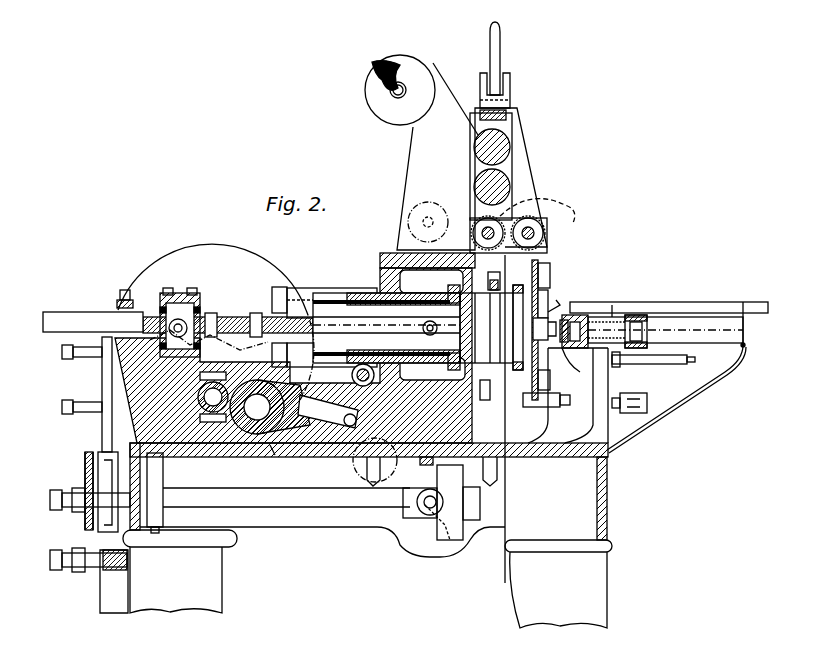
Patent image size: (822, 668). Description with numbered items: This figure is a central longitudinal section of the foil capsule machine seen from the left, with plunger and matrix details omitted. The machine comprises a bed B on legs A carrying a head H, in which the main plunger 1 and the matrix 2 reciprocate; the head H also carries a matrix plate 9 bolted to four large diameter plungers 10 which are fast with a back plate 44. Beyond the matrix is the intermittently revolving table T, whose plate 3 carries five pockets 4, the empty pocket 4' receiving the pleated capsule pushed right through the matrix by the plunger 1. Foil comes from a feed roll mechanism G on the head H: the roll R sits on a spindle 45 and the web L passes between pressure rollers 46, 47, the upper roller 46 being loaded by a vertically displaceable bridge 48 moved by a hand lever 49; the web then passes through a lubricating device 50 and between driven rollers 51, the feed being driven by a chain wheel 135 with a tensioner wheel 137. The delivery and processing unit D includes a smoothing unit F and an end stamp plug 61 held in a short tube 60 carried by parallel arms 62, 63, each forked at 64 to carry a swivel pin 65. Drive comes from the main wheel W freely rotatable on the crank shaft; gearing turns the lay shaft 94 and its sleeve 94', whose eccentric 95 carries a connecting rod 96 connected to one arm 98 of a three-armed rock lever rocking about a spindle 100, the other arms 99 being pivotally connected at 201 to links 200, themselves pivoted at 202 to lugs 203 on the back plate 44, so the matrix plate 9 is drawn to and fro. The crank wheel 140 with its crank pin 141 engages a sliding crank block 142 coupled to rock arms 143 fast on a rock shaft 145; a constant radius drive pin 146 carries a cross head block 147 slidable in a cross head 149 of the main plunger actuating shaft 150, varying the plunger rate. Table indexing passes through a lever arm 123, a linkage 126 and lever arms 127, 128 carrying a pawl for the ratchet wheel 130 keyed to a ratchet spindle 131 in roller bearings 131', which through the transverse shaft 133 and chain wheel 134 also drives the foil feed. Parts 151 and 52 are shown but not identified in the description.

The feed roll mechanism G is at (472, 179).
The web roll R is at (365, 80).
The spindle 45 is at (390, 95).
The web L is at (445, 95).
The hand lever 49 is at (500, 60).
The vertically displaceable bridge 48 is at (506, 115).
The upper pressure roller 46 is at (495, 145).
The lower pressure roller 47 is at (498, 185).
The chain wheel 135 is at (410, 218).
The lubricating device 50 is at (544, 212).
The driven rollers 51 is at (495, 226).
The head H is at (466, 425).
The pivotal connection 202 is at (431, 281).
The back plate 44 is at (455, 363).
The crank wheel 140 is at (215, 317).
The main plunger actuating shaft 150 is at (257, 315).
The constant radius drive pin 146 is at (178, 320).
The cross head block 147 is at (185, 288).
The cross head 149 is at (200, 300).
The tube 151 is at (295, 290).
The rock arm 143 is at (285, 352).
The sliding crank block 142 is at (211, 340).
The pivotal connection 201 is at (352, 292).
The links 200 is at (386, 349).
The rock lever arms 99 is at (350, 340).
The lugs 203 is at (445, 327).
The matrix plate 9 is at (519, 285).
The plungers 10 is at (492, 400).
The plate 3 is at (538, 358).
The pockets 4 is at (546, 334).
The table T is at (545, 300).
The main plunger 1 is at (540, 329).
The matrix 2 is at (550, 325).
The empty pocket 4' is at (546, 310).
The smoothing unit F is at (568, 379).
The plug 61 is at (571, 367).
The short tube 60 is at (568, 318).
The operating arm 62 is at (592, 317).
The delivery and processing unit D is at (722, 310).
The operating arm 63 is at (645, 315).
The fork 64 is at (648, 320).
The swivel pin 65 is at (642, 332).
The frame 52 is at (505, 473).
The legs A is at (356, 579).
The ratchet spindle 131 is at (322, 522).
The roller bearings 131' is at (174, 493).
The transverse intermittently driven shaft 133 is at (425, 508).
The chain wheel 134 is at (445, 530).
The bed B is at (361, 460).
The tensioner wheel 137 is at (358, 478).
The rock shaft 145 is at (248, 455).
The lay shaft 94 is at (270, 459).
The eccentric 95 is at (292, 456).
The sleeve 94' is at (280, 472).
The linkage 126 is at (102, 430).
The lever arm 127 is at (104, 452).
The lever arm 123 is at (98, 360).
The crank pin 141 is at (100, 395).
The ratchet wheel 130 is at (85, 458).
The lever arm 128 is at (98, 508).
The rock lever arm 98 is at (305, 415).
The connecting rod 96 is at (336, 408).
The spindle 100 is at (352, 375).
The main wheel W is at (260, 262).